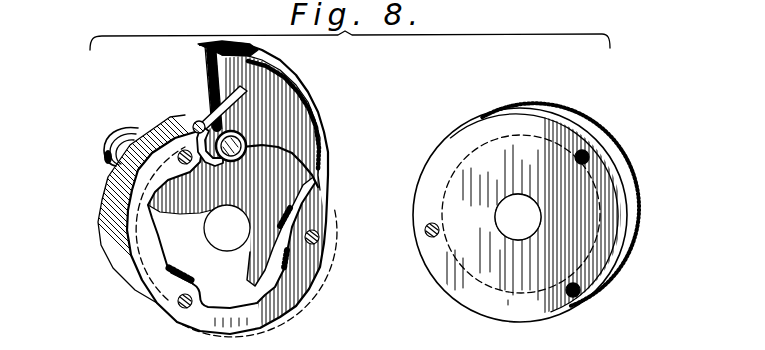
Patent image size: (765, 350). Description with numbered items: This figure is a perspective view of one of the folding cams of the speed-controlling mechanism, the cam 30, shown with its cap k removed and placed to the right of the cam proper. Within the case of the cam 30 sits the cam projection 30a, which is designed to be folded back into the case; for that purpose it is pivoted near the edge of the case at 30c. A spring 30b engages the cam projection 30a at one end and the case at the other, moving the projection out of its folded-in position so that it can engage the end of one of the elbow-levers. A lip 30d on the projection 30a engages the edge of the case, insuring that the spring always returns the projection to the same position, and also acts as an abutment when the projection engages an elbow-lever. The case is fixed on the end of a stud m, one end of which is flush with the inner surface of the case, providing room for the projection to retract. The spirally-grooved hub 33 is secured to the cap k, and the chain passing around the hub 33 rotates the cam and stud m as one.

The cam 30 is at (115, 192).
The cam projection 30a is at (288, 74).
The spring 30b is at (232, 100).
The pivot 30c is at (247, 137).
The lip 30d is at (197, 127).
The stud m is at (110, 140).
The spirally-grooved hub 33 is at (599, 151).
The cap k is at (555, 255).